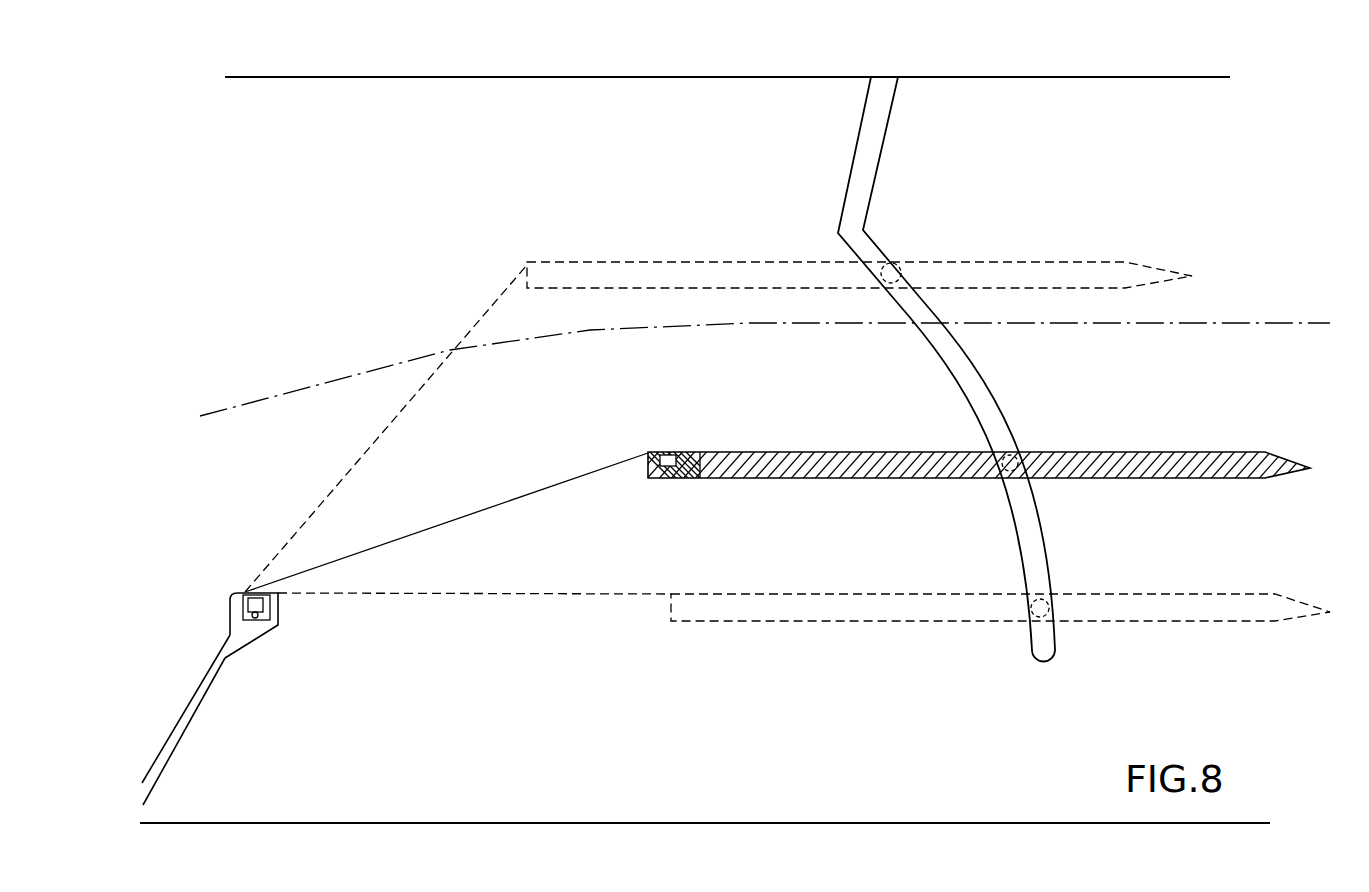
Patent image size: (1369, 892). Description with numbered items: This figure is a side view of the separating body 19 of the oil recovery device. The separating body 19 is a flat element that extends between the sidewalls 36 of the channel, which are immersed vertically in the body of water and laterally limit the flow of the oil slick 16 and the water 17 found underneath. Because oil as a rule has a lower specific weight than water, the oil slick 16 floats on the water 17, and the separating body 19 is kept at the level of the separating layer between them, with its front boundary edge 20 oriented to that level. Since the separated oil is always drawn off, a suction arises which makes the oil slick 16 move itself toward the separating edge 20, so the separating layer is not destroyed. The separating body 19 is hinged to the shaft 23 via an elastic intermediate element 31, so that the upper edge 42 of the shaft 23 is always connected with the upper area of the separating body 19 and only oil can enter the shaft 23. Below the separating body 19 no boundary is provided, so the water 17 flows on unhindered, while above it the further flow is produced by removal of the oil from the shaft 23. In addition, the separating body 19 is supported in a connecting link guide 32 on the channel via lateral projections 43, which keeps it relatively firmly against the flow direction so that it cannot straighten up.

The sidewalls 36 is at (1003, 77).
The separating body 19 is at (598, 275).
The connecting link guide 32 is at (975, 380).
The front boundary edge 20 is at (1298, 465).
The oil slick 16 is at (1197, 398).
The water 17 is at (1190, 554).
The elastic intermediate element 31 is at (446, 522).
The upper edge of the shaft 42 is at (278, 625).
The shaft 23 is at (170, 697).
The lateral projections 43 is at (1000, 475).